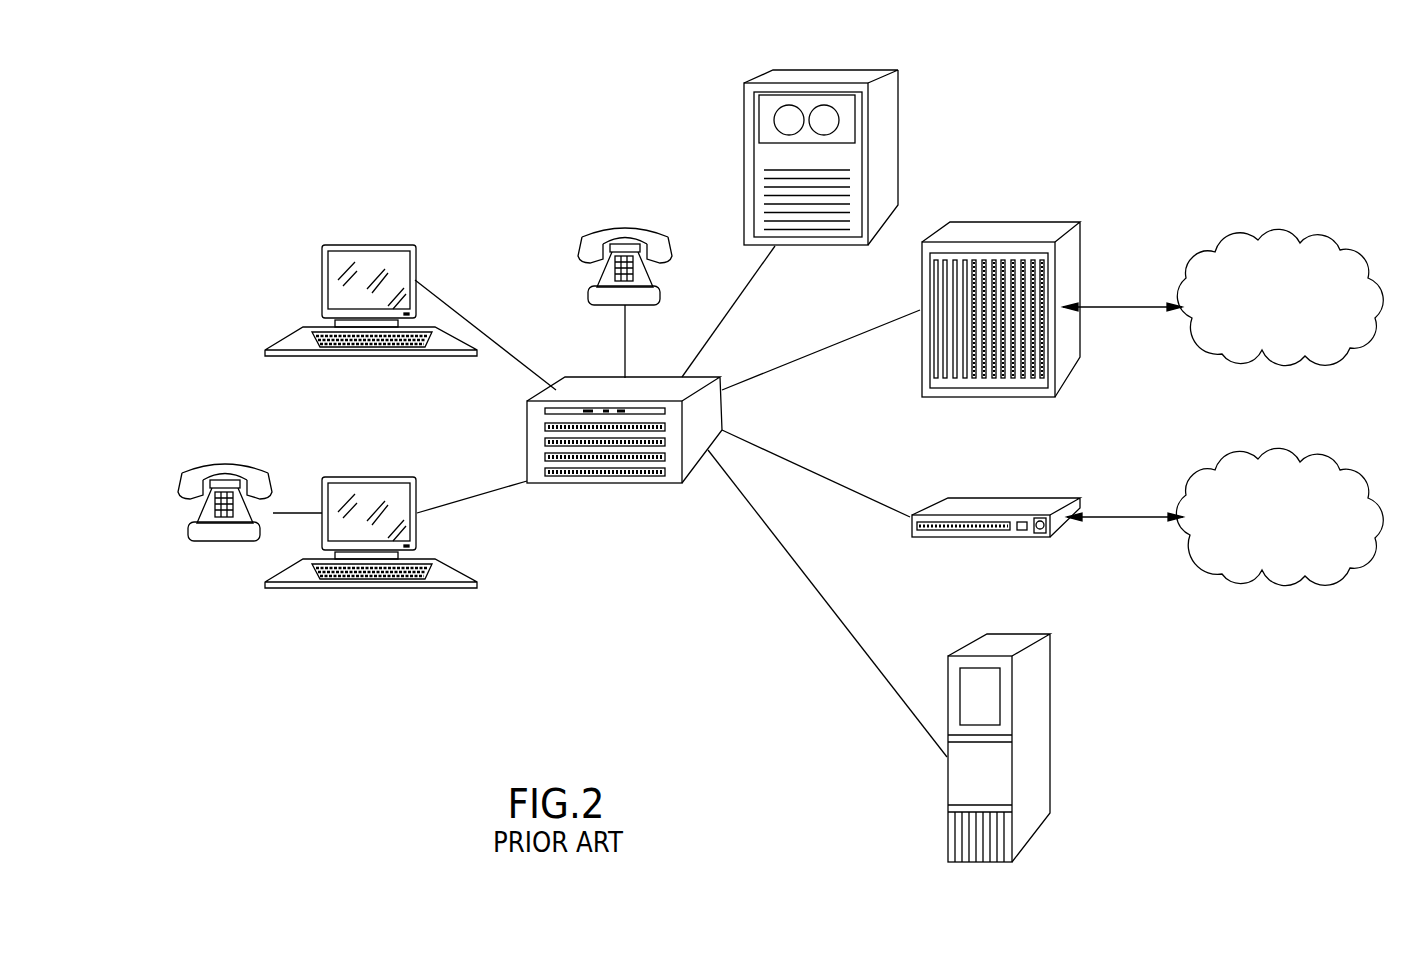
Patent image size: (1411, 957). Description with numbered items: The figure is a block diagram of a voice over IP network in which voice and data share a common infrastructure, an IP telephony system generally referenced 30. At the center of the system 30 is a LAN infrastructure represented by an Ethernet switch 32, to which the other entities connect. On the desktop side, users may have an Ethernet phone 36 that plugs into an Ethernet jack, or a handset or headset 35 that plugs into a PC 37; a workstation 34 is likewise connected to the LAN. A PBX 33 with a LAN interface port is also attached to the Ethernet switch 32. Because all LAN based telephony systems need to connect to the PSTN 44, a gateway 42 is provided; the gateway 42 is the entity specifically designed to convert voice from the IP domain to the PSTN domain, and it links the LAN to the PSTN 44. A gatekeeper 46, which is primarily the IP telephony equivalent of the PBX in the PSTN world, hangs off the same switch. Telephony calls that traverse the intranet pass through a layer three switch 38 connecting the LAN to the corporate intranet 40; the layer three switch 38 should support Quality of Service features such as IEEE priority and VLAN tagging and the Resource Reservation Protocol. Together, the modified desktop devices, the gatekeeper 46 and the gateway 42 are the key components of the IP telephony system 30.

The IP telephony system 30 is at (387, 693).
The Ethernet switch 32 is at (590, 376).
The PBX 33 is at (903, 146).
The workstation 34 is at (377, 243).
The handset or headset 35 is at (240, 463).
The Ethernet phone 36 is at (632, 223).
The PC 37 is at (382, 477).
The Layer 3 switch 38 is at (1007, 232).
The corporate intranet 40 is at (1260, 237).
The gateway 42 is at (1035, 505).
The PSTN 44 is at (1290, 578).
The gatekeeper 46 is at (1043, 700).